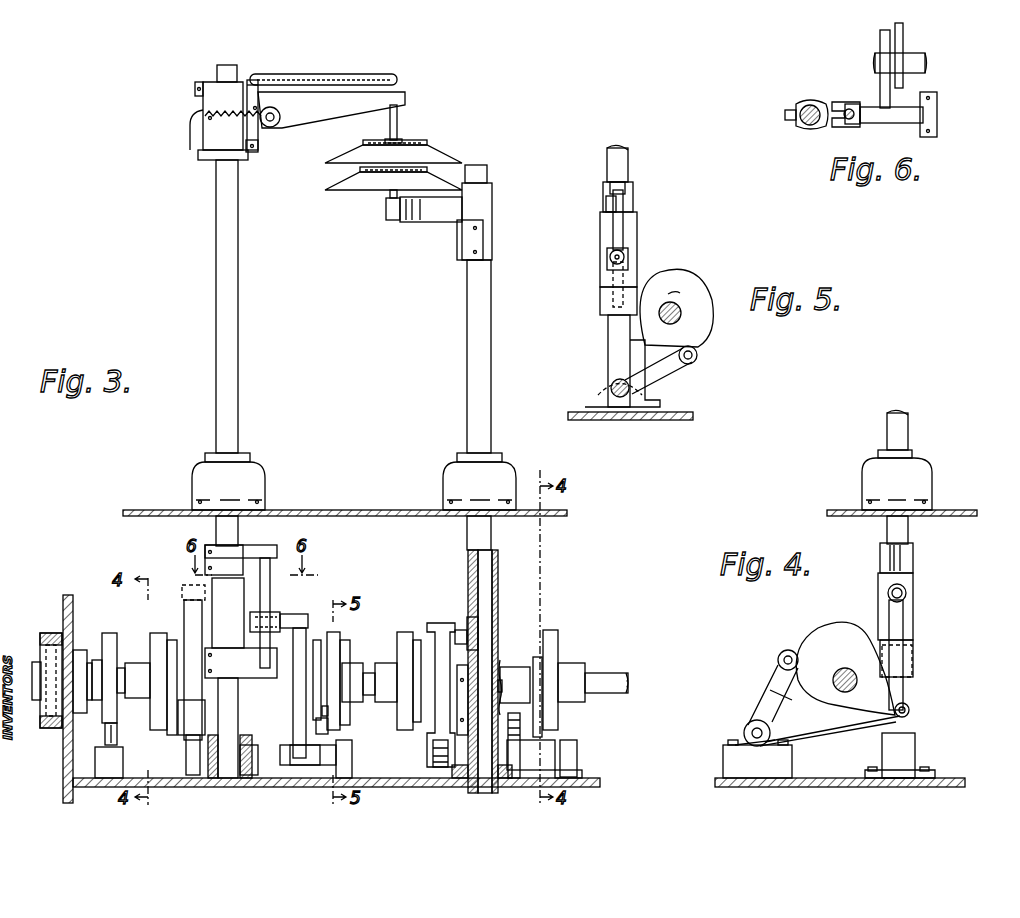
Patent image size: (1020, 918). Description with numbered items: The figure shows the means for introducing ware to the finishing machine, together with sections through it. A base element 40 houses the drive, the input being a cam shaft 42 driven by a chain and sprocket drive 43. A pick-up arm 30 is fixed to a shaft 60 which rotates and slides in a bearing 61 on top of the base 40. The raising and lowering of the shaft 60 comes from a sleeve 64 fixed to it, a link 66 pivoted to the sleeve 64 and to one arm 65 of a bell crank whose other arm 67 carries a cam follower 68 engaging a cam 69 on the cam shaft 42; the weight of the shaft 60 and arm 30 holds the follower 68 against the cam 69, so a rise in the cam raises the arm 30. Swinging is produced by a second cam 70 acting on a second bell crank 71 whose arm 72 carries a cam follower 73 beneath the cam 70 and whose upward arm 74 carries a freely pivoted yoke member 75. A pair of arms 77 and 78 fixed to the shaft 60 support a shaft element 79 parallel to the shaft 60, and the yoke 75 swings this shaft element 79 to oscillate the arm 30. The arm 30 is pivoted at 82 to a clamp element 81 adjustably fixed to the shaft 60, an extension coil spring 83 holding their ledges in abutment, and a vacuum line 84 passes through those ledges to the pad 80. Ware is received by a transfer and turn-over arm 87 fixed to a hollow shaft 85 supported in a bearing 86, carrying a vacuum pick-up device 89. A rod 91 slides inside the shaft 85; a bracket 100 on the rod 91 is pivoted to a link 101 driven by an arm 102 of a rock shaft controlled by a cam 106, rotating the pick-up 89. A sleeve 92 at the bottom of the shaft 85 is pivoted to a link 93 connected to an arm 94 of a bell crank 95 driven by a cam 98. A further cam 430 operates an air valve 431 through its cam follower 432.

In FIG. 3, the pick-up arm 30 is at (320, 112).
In FIG. 3, the base element 40 is at (356, 510).
In FIG. 5, the base element 40 is at (672, 420).
In FIG. 4, the base element 40 is at (838, 510).
In FIG. 3, the cam shaft 42 is at (600, 672).
In FIG. 5, the cam shaft 42 is at (682, 320).
In FIG. 4, the cam shaft 42 is at (850, 668).
In FIG. 3, the chain and sprocket drive 43 is at (45, 632).
In FIG. 3, the cam 430 is at (108, 633).
In FIG. 3, the air valve 431 is at (100, 765).
In FIG. 3, the cam follower 432 is at (105, 735).
In FIG. 3, the shaft 60 is at (240, 383).
In FIG. 5, the shaft 60 is at (630, 165).
In FIG. 4, the shaft 60 is at (910, 432).
In FIG. 3, the bearing 61 is at (255, 470).
In FIG. 4, the bearing 61 is at (932, 486).
In FIG. 3, the sleeve 64 is at (237, 620).
In FIG. 5, the sleeve 64 is at (604, 234).
In FIG. 4, the sleeve 64 is at (914, 590).
In FIG. 3, the bell crank arm 65 is at (180, 745).
In FIG. 4, the bell crank arm 65 is at (833, 730).
In FIG. 3, the link 66 is at (190, 585).
In FIG. 4, the link 66 is at (906, 612).
In FIG. 4, the bell crank arm 67 is at (768, 683).
In FIG. 4, the cam follower 68 is at (788, 650).
In FIG. 3, the cam 69 is at (166, 633).
In FIG. 4, the cam 69 is at (828, 642).
In FIG. 3, the second cam 70 is at (320, 650).
In FIG. 5, the second cam 70 is at (686, 282).
In FIG. 3, the second bell crank 71 is at (330, 752).
In FIG. 5, the second bell crank 71 is at (610, 392).
In FIG. 5, the bell crank arm 72 is at (664, 378).
In FIG. 3, the cam follower 73 is at (330, 727).
In FIG. 5, the cam follower 73 is at (698, 363).
In FIG. 3, the bell crank arm 74 is at (292, 710).
In FIG. 5, the bell crank arm 74 is at (612, 352).
In FIG. 3, the yoke member 75 is at (282, 610).
In FIG. 5, the yoke member 75 is at (609, 258).
In FIG. 6, the yoke member 75 is at (842, 130).
In FIG. 3, the arm 77 is at (257, 545).
In FIG. 5, the arm 77 is at (604, 192).
In FIG. 6, the arm 77 is at (808, 102).
In FIG. 4, the arm 77 is at (914, 555).
In FIG. 3, the arm 78 is at (237, 739).
In FIG. 5, the arm 78 is at (604, 300).
In FIG. 4, the arm 78 is at (912, 660).
In FIG. 3, the shaft element 79 is at (265, 613).
In FIG. 5, the shaft element 79 is at (623, 234).
In FIG. 6, the shaft element 79 is at (838, 102).
In FIG. 3, the pad 80 is at (410, 140).
In FIG. 3, the clamp element 81 is at (203, 143).
In FIG. 3, the pivot 82 is at (271, 127).
In FIG. 3, the extension coil spring 83 is at (214, 110).
In FIG. 3, the vacuum line 84 is at (302, 73).
In FIG. 3, the shaft 85 is at (467, 378).
In FIG. 3, the bearing 86 is at (455, 470).
In FIG. 3, the transfer and turn-over arm 87 is at (440, 225).
In FIG. 3, the vacuum pick-up device 89 is at (374, 193).
In FIG. 3, the rod 91 is at (476, 576).
In FIG. 3, the sleeve 92 is at (504, 640).
In FIG. 3, the link 93 is at (516, 682).
In FIG. 3, the bell crank arm 94 is at (518, 765).
In FIG. 3, the bell crank 95 is at (557, 750).
In FIG. 3, the cam 98 is at (537, 656).
In FIG. 3, the bracket 100 is at (472, 628).
In FIG. 3, the link 101 is at (433, 628).
In FIG. 3, the rock shaft arm 102 is at (432, 758).
In FIG. 3, the cam 106 is at (408, 632).